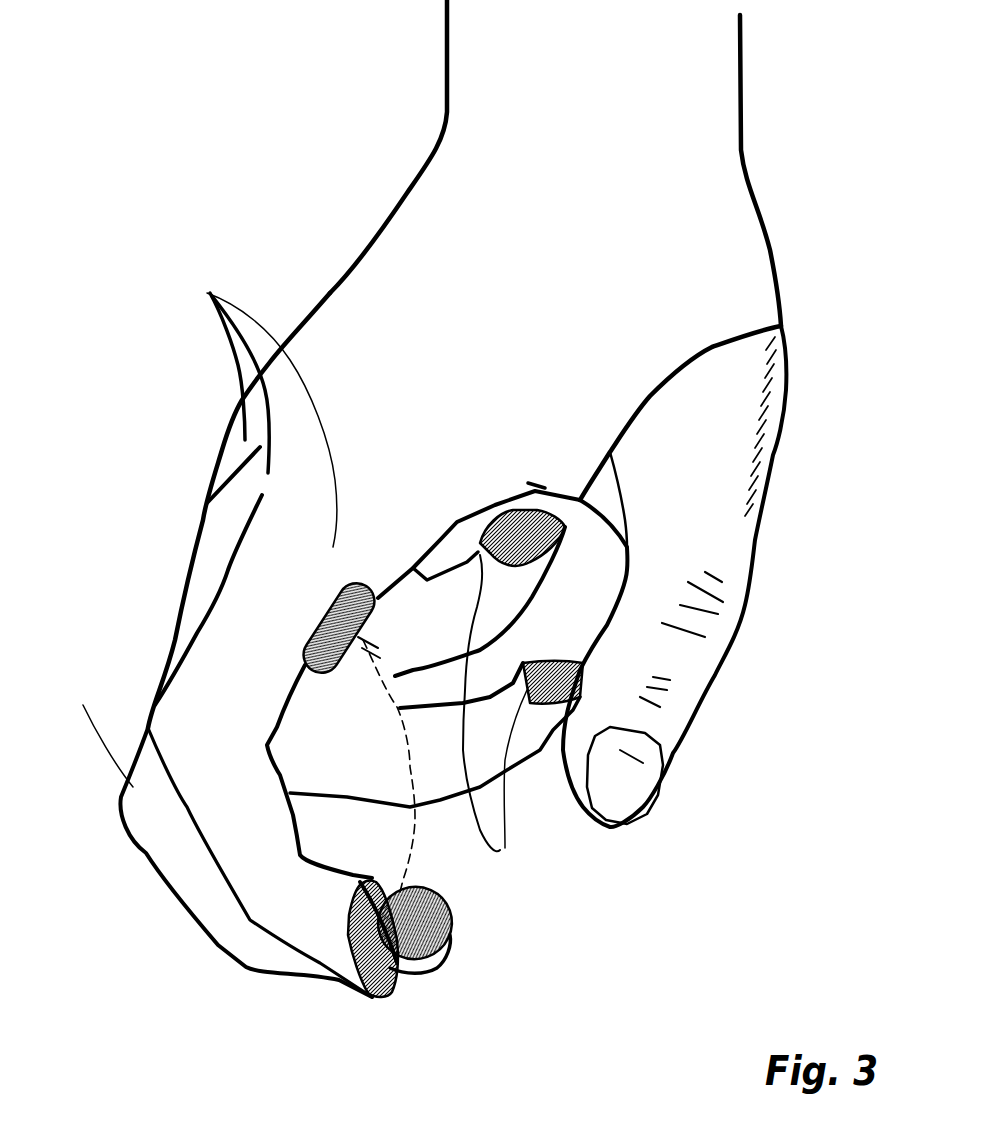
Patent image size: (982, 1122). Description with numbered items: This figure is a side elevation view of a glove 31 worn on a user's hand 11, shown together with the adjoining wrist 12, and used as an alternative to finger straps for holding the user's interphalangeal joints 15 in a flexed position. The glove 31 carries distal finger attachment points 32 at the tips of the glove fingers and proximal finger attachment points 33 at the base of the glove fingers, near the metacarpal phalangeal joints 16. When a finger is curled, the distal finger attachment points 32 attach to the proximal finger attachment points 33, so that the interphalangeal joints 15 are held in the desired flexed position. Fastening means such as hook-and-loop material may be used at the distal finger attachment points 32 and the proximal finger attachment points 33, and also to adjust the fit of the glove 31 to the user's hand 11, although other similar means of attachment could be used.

The hand 11 is at (720, 530).
The wrist 12 is at (514, 152).
The interphalangeal joints 15 is at (152, 713).
The metacarpal phalangeal joints 16 is at (210, 293).
The glove 31 is at (423, 278).
The distal finger attachment points 32 is at (413, 893).
The proximal finger attachment points 33 is at (251, 539).